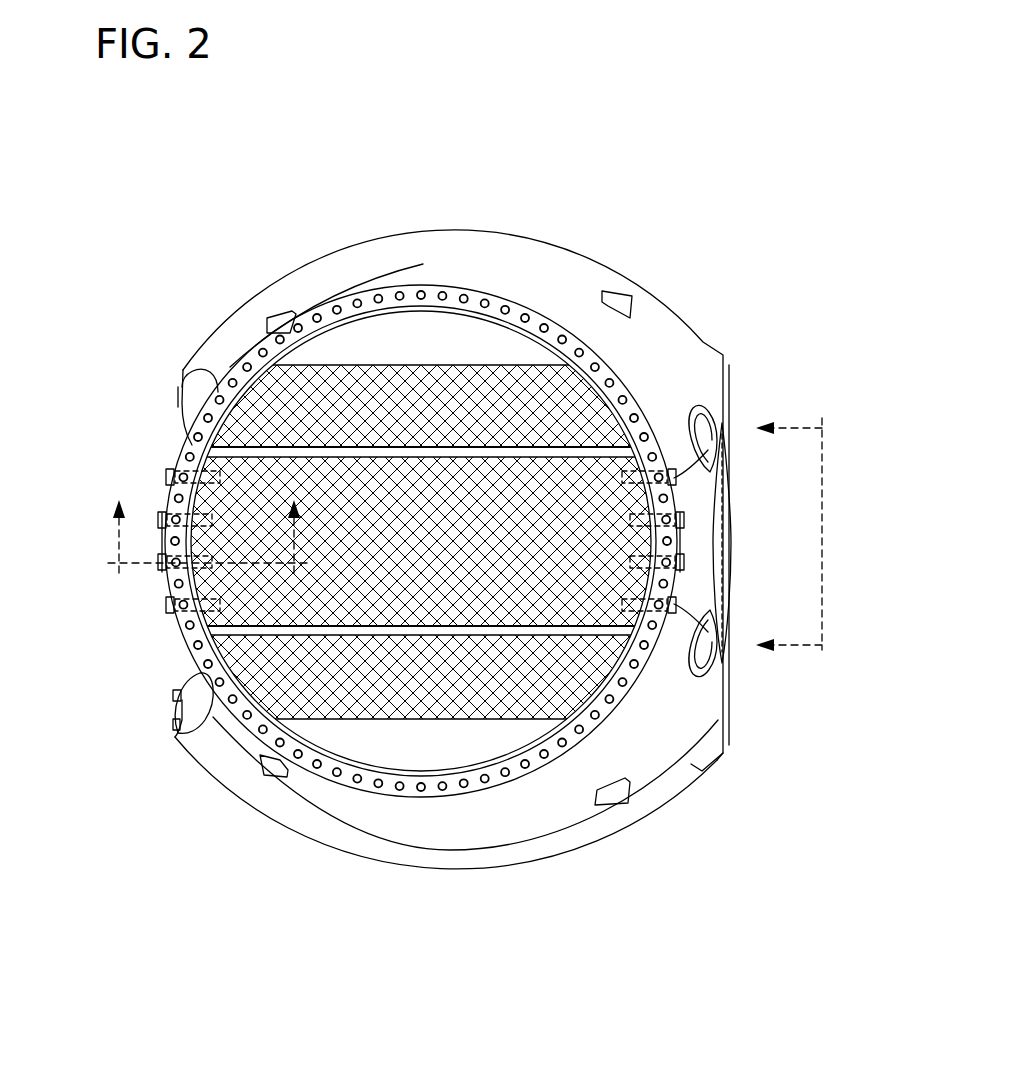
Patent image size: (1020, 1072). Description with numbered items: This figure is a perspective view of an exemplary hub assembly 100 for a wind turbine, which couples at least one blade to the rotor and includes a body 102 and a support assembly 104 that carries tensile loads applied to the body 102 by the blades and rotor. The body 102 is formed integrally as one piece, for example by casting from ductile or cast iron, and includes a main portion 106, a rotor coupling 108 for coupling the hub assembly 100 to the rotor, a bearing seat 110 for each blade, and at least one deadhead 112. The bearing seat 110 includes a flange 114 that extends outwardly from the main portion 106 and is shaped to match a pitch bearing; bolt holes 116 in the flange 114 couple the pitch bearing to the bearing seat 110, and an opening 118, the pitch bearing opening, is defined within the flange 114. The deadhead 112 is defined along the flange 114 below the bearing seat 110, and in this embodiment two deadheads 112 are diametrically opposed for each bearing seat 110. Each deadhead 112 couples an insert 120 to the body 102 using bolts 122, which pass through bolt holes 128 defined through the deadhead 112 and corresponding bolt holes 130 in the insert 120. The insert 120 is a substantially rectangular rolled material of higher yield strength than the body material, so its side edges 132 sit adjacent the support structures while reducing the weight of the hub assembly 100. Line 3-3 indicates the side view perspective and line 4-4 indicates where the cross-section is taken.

The hub assembly 100 is at (684, 180).
The body 102 is at (176, 327).
The support assembly 104 is at (232, 632).
The main portion 106 is at (648, 790).
The rotor coupling 108 is at (731, 570).
The bearing seat 110 is at (524, 238).
The deadhead 112 is at (162, 497).
The flange 114 is at (196, 697).
The bolt holes 116 is at (506, 777).
The opening 118 is at (592, 430).
The insert 120 is at (397, 393).
The bolts 122 is at (707, 427).
The bolt holes 128 is at (170, 586).
The bolt holes 130 is at (186, 468).
The side edges 132 is at (242, 454).
The line 3- 3 is at (799, 536).
The line 4- 4 is at (206, 545).